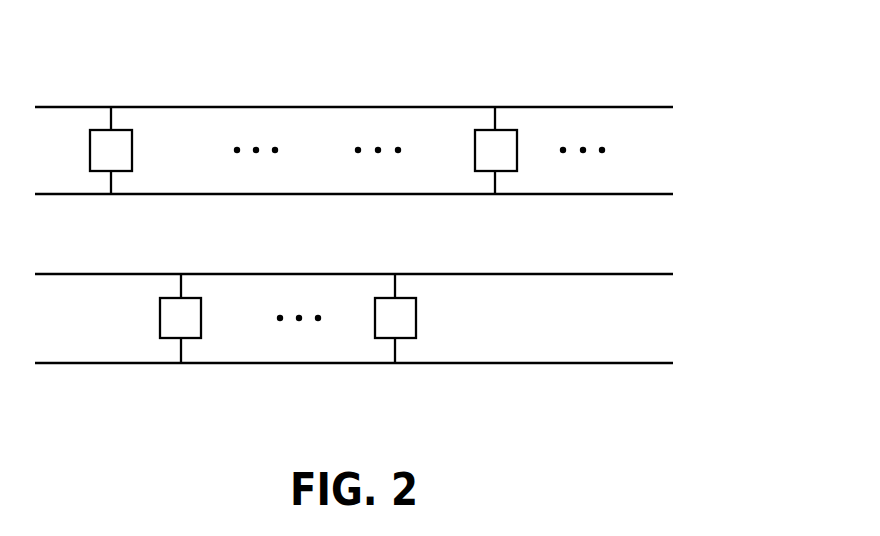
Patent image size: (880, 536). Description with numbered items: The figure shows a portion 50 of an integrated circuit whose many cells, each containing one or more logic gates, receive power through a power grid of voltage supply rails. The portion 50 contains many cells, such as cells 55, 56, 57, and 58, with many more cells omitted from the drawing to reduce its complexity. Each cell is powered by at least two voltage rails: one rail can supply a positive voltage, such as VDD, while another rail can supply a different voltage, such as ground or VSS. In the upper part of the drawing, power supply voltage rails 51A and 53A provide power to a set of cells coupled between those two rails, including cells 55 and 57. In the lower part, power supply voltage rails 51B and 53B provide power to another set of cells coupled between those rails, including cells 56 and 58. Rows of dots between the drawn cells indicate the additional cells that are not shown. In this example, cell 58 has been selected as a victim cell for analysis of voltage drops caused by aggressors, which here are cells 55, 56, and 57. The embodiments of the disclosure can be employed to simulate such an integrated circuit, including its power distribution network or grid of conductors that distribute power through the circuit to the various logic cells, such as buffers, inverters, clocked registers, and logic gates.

The portion of the IC 50 is at (532, 36).
The power supply voltage rail 51A is at (640, 107).
The power supply voltage rail 53A is at (640, 194).
The power supply voltage rail 51B is at (640, 274).
The power supply voltage rail 53B is at (640, 363).
The cell 55 is at (90, 143).
The cell 57 is at (475, 143).
The cell 56 is at (160, 322).
The cell 58 is at (375, 322).